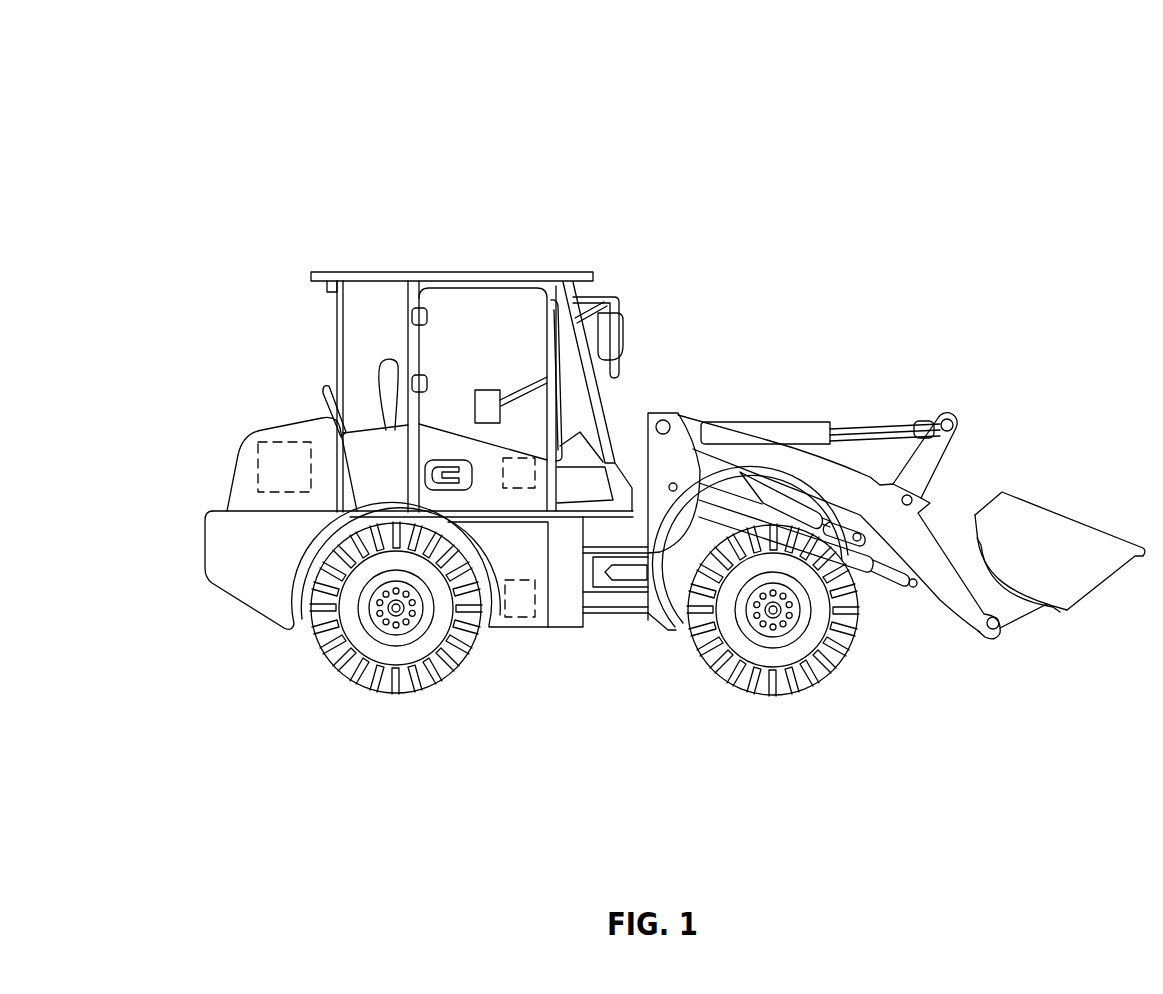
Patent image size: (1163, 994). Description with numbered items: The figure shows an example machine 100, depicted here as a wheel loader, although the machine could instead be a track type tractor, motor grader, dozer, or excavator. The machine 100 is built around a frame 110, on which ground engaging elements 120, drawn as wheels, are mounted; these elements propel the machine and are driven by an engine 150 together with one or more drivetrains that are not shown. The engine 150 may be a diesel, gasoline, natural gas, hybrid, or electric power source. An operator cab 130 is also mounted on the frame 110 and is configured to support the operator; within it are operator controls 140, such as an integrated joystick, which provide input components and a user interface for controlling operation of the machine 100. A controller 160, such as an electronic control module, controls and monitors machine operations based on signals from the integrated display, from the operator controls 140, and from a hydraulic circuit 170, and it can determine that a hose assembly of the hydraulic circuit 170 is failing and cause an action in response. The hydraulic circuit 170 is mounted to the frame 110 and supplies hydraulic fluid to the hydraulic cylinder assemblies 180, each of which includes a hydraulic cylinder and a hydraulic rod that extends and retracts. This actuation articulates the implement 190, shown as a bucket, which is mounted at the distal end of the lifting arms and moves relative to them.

The machine 100 is at (160, 38).
The frame 110 is at (558, 630).
The ground engaging elements 120 is at (315, 641).
The operator cab 130 is at (337, 346).
The operator controls 140 is at (470, 385).
The engine 150 is at (255, 457).
The controller 160 is at (517, 490).
The hydraulic circuit 170 is at (515, 618).
The hydraulic cylinder assemblies 180 is at (722, 420).
The implement 190 is at (1060, 525).